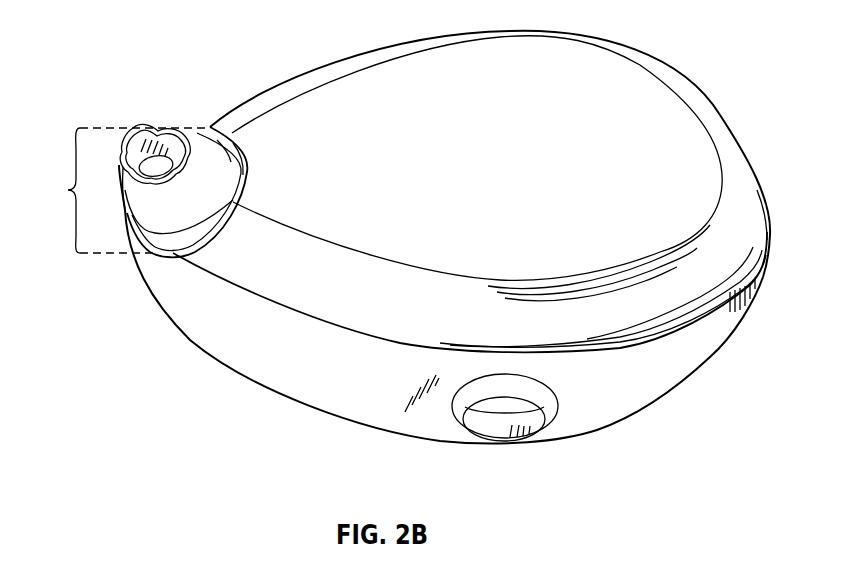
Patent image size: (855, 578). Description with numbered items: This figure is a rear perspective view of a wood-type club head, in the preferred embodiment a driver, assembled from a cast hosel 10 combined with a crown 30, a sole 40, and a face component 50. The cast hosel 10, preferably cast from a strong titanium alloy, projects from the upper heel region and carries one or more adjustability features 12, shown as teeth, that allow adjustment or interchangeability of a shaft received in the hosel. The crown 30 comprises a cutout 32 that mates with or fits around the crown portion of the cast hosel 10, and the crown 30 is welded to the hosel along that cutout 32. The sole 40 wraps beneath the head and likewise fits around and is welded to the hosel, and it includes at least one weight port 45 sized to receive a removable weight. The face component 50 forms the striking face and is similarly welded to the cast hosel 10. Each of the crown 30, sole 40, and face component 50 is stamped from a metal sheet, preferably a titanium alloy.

The cast hosel 10 is at (148, 196).
The adjustability features 12 is at (145, 126).
The crown 30 is at (589, 86).
The cutout 32 is at (124, 190).
The sole 40 is at (705, 351).
The weight port 45 is at (497, 428).
The face component 50 is at (327, 84).